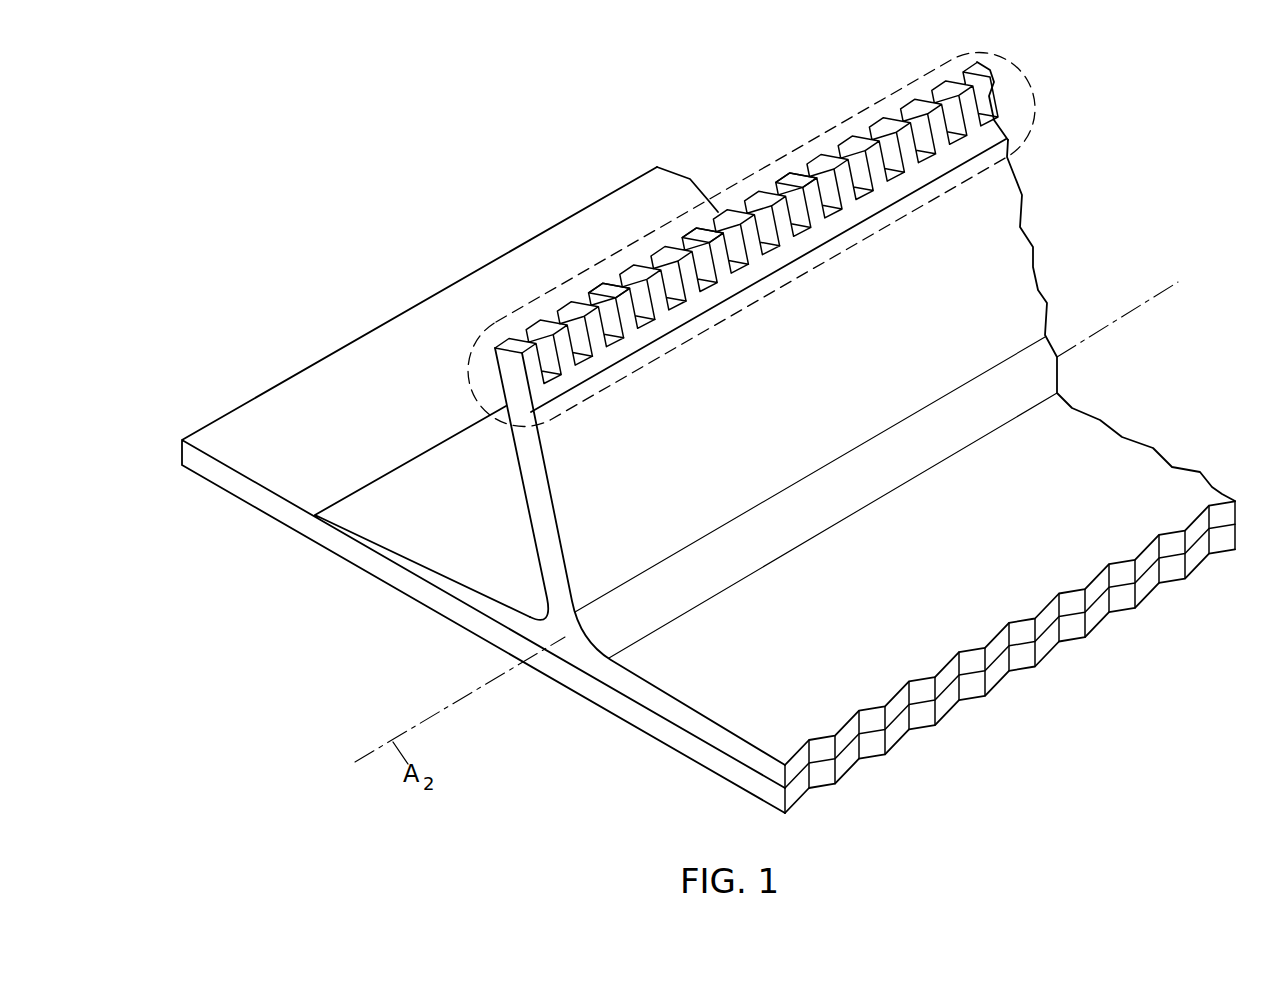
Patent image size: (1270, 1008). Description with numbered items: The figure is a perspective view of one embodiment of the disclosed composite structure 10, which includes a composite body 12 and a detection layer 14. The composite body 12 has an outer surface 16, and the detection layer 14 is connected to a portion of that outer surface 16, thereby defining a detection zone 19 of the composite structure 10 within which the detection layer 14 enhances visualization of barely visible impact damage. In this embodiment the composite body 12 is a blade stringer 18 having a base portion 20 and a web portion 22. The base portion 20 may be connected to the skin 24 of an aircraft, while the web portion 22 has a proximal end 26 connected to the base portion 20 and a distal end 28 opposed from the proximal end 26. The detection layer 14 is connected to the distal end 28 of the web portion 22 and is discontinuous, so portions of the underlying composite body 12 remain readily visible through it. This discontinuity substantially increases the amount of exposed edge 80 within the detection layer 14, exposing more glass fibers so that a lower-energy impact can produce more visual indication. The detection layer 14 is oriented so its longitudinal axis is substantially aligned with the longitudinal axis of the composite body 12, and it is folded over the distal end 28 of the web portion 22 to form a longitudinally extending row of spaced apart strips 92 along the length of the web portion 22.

The composite structure 10 is at (318, 147).
The composite body 12 is at (1004, 234).
The detection layer 14 is at (840, 228).
The outer surface 16 is at (858, 354).
The blade stringer 18 is at (1002, 300).
The detection zone 19 is at (719, 327).
The base portion 20 is at (1147, 463).
The web portion 22 is at (563, 492).
The skin 24 is at (226, 434).
The proximal end 26 is at (1077, 384).
The distal end 28 is at (1069, 127).
The exposed edge 80 is at (592, 350).
The strips 92 is at (790, 180).